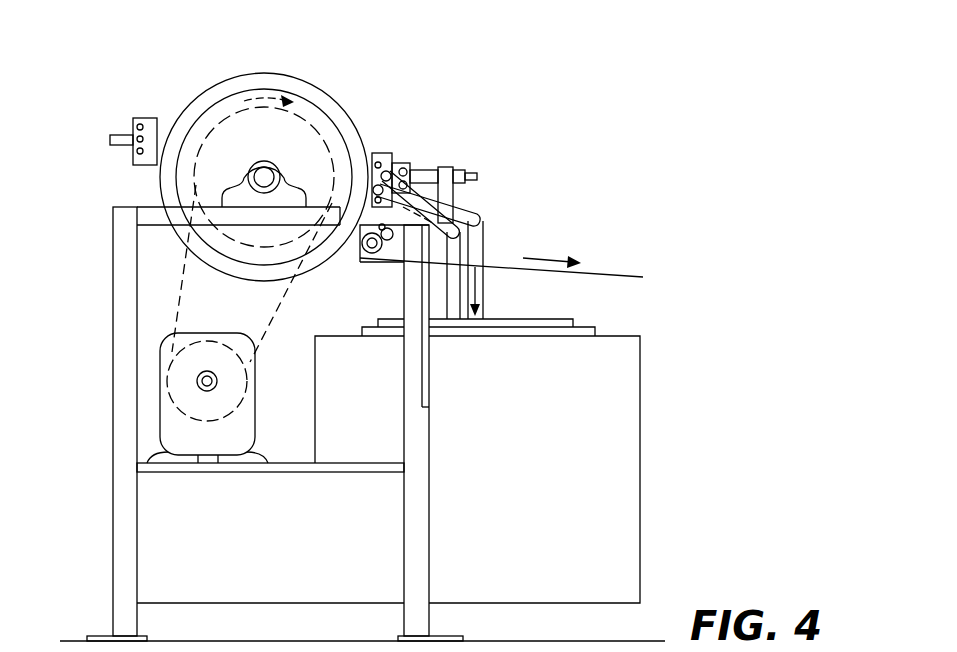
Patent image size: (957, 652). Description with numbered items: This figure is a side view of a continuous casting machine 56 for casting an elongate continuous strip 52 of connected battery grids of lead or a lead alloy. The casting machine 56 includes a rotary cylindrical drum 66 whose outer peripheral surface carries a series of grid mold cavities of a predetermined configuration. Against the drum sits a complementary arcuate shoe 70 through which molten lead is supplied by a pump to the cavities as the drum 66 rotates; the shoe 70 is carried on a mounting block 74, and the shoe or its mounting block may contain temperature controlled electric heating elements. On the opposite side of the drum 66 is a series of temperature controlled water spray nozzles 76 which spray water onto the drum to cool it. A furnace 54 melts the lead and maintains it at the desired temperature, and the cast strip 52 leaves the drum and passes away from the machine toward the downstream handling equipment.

The elongate continuous strip 52 is at (627, 277).
The furnace 54 is at (632, 360).
The continuous casting machine 56 is at (108, 449).
The rotary cylindrical drum 66 is at (331, 84).
The arcuate shoe 70 is at (376, 153).
The mounting block 74 is at (403, 160).
The water spray nozzles 76 is at (151, 118).